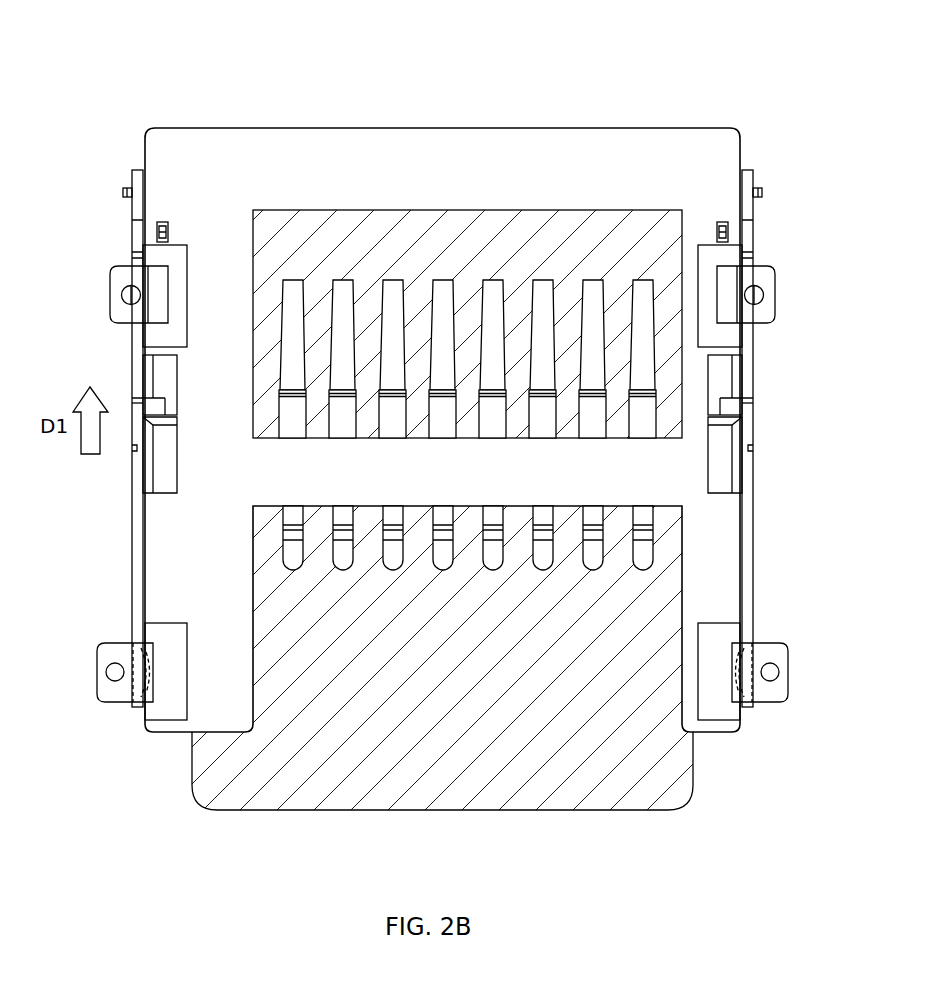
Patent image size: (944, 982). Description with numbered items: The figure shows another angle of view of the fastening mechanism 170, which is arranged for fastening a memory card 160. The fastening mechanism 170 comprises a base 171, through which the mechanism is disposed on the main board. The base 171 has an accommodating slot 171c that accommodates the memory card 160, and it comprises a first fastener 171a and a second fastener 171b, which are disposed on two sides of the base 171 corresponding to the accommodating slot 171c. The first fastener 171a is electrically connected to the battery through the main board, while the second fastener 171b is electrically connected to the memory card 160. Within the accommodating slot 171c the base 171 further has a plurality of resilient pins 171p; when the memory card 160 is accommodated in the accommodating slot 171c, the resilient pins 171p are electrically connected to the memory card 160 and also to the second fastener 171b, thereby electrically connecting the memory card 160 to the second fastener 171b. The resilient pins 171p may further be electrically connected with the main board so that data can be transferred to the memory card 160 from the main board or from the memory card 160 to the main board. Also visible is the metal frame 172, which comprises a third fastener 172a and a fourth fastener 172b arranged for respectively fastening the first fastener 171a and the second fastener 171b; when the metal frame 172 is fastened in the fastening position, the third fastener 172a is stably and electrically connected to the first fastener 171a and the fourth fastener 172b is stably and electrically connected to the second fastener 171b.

The fastening mechanism 170 is at (664, 56).
The base 171 is at (178, 157).
The accommodating slot 171c is at (278, 214).
The resilient pins 171p is at (595, 429).
The first fastener 171a is at (117, 696).
The second fastener 171b is at (768, 696).
The metal frame 172 is at (130, 213).
The third fastener 172a is at (139, 720).
The fourth fastener 172b is at (747, 720).
The memory card 160 is at (607, 796).